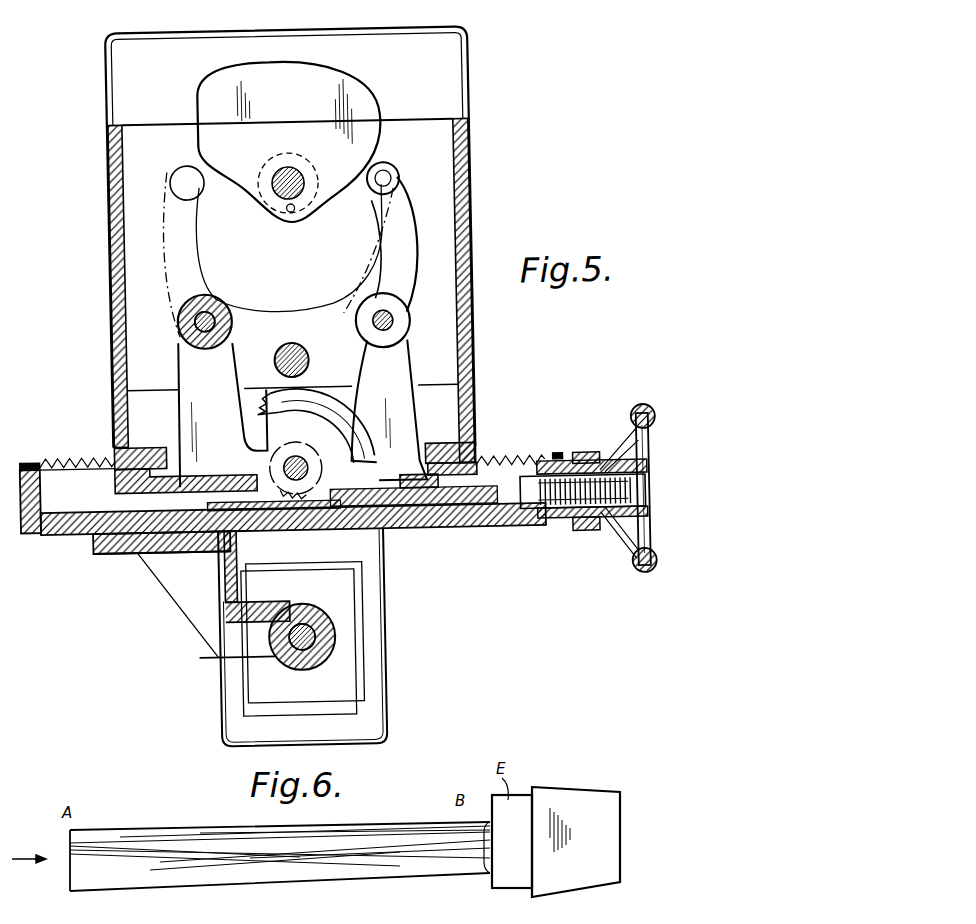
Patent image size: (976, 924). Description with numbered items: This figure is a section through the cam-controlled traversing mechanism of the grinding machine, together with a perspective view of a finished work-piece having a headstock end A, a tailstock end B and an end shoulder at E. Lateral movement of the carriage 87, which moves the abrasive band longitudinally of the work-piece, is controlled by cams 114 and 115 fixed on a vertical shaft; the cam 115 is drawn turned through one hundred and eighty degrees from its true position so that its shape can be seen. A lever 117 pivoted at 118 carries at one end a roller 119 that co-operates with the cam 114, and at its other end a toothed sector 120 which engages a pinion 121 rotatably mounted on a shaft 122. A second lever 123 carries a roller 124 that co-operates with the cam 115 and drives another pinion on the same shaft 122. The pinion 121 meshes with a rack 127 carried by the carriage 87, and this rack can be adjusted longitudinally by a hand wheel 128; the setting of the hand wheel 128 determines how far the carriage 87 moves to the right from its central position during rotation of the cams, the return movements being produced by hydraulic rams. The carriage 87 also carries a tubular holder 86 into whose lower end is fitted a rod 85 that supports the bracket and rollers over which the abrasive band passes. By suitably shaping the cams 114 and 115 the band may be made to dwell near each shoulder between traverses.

The cam 114 is at (366, 96).
The cam 115 is at (350, 233).
The lever 117 is at (408, 246).
The pivot 118 is at (390, 321).
The roller 119 is at (397, 171).
The toothed sector 120 is at (362, 463).
The pinion 121 is at (294, 455).
The shaft 122 is at (280, 470).
The lever 123 is at (168, 250).
The roller 124 is at (182, 191).
The rack 127 is at (480, 515).
The hand wheel 128 is at (636, 412).
The carriage 87 is at (120, 542).
The rod 85 is at (295, 624).
The tubular holder 86 is at (295, 662).